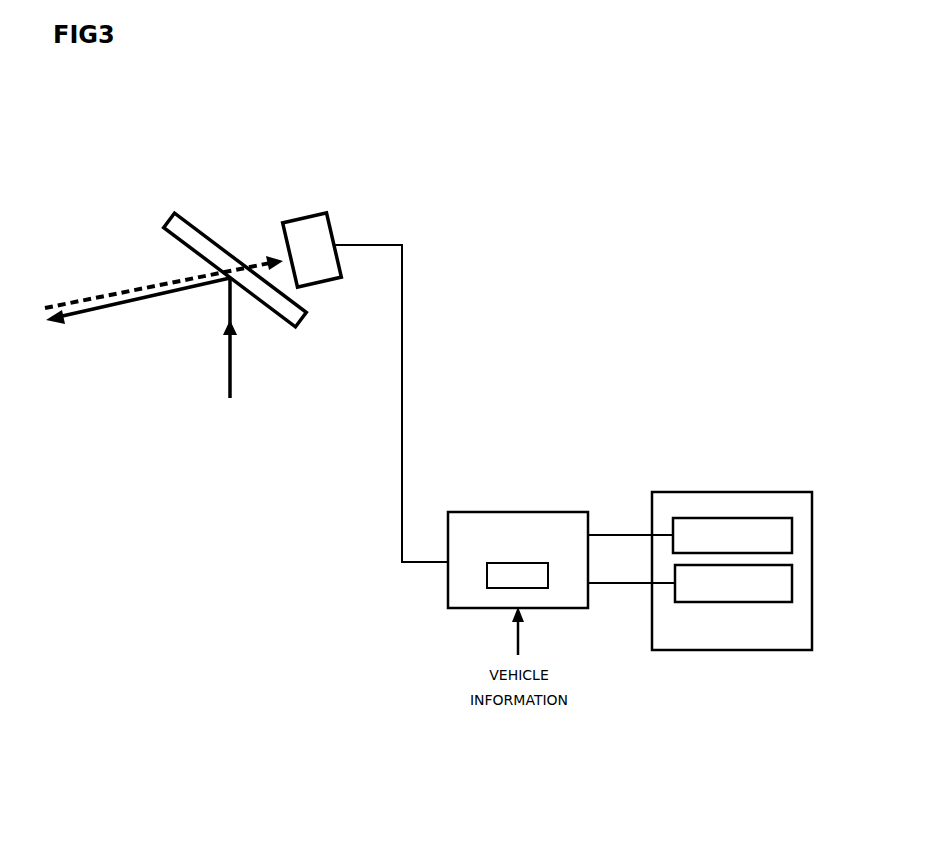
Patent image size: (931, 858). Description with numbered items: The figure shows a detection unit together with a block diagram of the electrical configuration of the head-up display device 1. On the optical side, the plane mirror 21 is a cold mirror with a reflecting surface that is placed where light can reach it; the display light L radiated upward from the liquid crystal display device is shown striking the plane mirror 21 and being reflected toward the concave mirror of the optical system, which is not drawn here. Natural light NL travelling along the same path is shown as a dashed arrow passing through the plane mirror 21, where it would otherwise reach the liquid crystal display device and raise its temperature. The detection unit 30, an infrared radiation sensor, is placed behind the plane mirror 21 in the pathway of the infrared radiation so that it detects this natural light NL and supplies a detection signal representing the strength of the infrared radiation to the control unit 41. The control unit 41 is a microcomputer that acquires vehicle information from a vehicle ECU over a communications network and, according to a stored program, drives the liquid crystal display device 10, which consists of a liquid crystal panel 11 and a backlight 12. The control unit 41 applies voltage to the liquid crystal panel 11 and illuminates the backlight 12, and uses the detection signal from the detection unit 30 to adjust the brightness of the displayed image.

The head-up display device 1 is at (677, 198).
The plane mirror 21 is at (190, 219).
The detection unit 30 is at (316, 222).
The control unit 41 is at (517, 512).
The liquid crystal display device 10 is at (747, 594).
The liquid crystal panel 11 is at (792, 542).
The backlight 12 is at (792, 595).
The display light L is at (230, 363).
The natural light NL is at (112, 293).